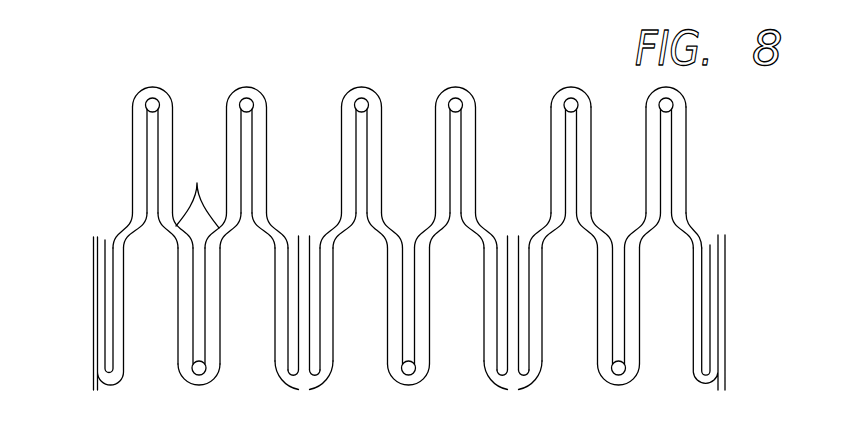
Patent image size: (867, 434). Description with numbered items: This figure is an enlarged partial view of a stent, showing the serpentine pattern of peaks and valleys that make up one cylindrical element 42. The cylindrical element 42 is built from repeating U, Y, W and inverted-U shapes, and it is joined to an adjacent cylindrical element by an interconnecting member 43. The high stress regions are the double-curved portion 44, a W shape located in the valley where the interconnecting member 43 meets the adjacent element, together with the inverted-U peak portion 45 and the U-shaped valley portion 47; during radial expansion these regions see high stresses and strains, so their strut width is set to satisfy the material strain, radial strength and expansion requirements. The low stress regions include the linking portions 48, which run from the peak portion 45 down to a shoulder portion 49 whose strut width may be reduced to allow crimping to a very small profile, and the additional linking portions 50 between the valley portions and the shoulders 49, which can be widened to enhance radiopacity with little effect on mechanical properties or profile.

The cylindrical element 42 is at (412, 217).
The interconnecting member 43 is at (298, 236).
The double-curved portion (W) 44 is at (519, 389).
The peak portion (inverted-U) 45 is at (153, 87).
The valley portion (U) 47 is at (405, 387).
The linking portion 48 is at (123, 105).
The shoulder portion 49 is at (112, 237).
The linking portion 50 is at (130, 262).